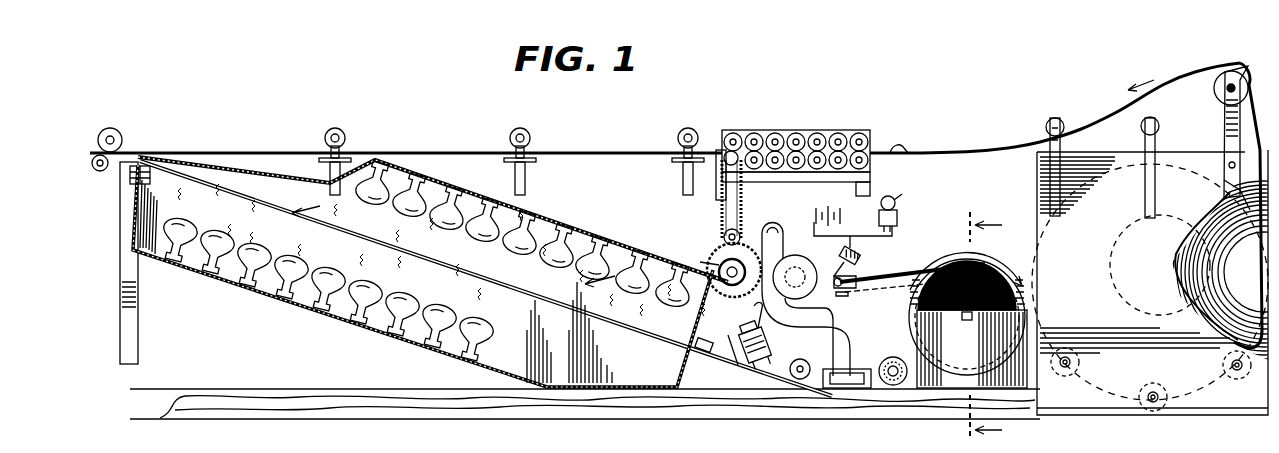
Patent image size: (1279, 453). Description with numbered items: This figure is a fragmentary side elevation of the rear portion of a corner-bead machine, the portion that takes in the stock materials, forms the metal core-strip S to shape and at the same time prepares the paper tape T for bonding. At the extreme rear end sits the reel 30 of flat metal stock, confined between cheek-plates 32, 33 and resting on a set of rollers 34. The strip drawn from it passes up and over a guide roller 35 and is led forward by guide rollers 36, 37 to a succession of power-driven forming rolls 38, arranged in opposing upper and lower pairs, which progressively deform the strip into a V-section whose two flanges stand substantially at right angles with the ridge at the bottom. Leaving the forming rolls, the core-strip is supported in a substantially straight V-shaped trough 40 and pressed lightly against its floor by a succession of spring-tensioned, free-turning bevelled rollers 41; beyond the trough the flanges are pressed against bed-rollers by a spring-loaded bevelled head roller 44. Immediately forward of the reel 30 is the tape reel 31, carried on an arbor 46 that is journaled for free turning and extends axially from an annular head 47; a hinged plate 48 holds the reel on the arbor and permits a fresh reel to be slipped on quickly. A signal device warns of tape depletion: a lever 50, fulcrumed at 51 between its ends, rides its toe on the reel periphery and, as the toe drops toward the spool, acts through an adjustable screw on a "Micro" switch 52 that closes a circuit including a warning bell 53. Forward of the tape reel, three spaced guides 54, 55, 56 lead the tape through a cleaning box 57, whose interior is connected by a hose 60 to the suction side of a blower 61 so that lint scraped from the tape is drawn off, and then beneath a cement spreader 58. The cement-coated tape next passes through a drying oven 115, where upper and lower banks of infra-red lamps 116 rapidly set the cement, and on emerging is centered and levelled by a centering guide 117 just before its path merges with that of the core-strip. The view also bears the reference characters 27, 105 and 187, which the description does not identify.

The section line 27 is at (997, 326).
The reel 30 is at (1210, 300).
The reel 31 is at (940, 274).
The cheek-plate 32 is at (1203, 160).
The cheek-plate 33 is at (1226, 192).
The rollers 34 is at (1075, 374).
The guide roller 35 is at (1216, 92).
The guide roller 36 is at (1056, 118).
The guide roller 37 is at (900, 145).
The forming rolls 38 is at (830, 130).
The V-shaped trough 40 is at (617, 154).
The free-turning rollers 41 is at (335, 128).
The spring-loaded bevelled head roller 44 is at (116, 138).
The arbor 46 is at (966, 324).
The annular head 47 is at (996, 262).
The plate 48 is at (916, 322).
The lever 50 is at (905, 287).
The fulcrum 51 is at (854, 288).
The "Micro" switch 52 is at (860, 258).
The warning bell 53 is at (899, 215).
The guide 54 is at (893, 362).
The guide 55 is at (798, 358).
The guide 56 is at (704, 352).
The cleaning box 57 is at (860, 367).
The cement spreader 58 is at (763, 337).
The hose 60 is at (858, 332).
The blower 61 is at (808, 262).
The lever 105 is at (756, 310).
The drying oven 115 is at (321, 326).
The infra-red lamps 116 is at (553, 225).
The centering guide 117 is at (150, 156).
The guide roller 187 is at (100, 171).
The core-strip S is at (946, 150).
The tape T is at (660, 339).